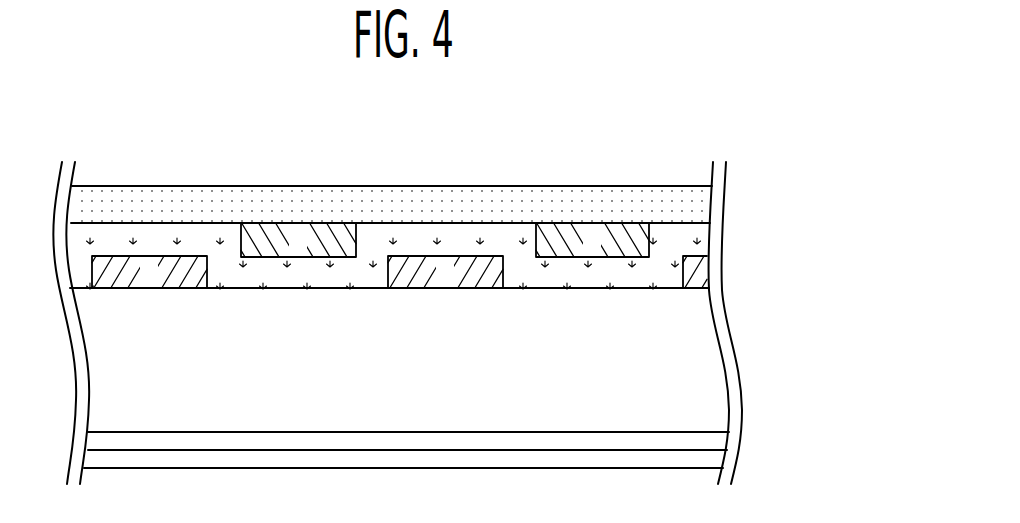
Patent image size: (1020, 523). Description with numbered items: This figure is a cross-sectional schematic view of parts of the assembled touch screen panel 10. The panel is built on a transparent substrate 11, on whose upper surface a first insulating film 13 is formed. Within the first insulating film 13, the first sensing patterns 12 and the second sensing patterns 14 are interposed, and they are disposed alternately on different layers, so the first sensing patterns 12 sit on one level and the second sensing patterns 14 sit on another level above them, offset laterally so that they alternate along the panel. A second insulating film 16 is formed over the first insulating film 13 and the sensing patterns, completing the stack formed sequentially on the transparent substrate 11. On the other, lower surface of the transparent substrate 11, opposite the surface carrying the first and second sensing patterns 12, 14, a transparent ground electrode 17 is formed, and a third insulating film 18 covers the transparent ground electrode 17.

The touch screen panel 10 is at (625, 144).
The transparent substrate 11 is at (710, 387).
The first sensing patterns 12 is at (483, 280).
The first insulating film 13 is at (693, 246).
The second sensing patterns 14 is at (645, 243).
The second insulating film 16 is at (697, 202).
The transparent ground electrode 17 is at (712, 441).
The third insulating film 18 is at (715, 463).